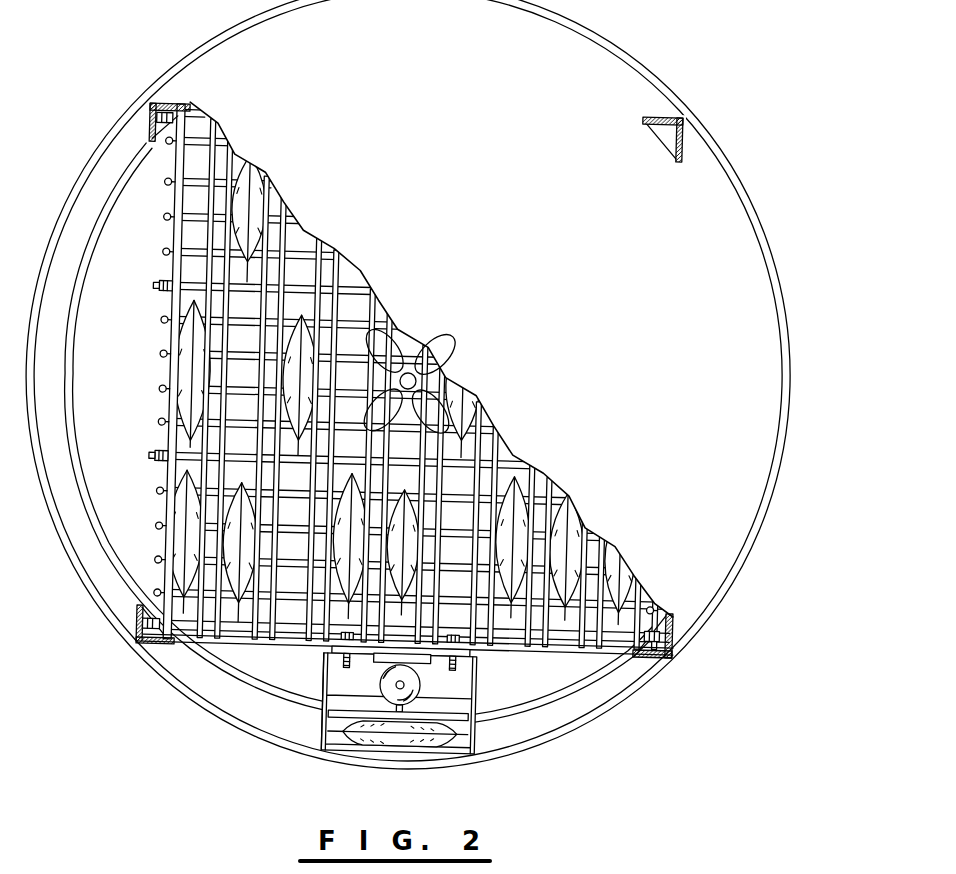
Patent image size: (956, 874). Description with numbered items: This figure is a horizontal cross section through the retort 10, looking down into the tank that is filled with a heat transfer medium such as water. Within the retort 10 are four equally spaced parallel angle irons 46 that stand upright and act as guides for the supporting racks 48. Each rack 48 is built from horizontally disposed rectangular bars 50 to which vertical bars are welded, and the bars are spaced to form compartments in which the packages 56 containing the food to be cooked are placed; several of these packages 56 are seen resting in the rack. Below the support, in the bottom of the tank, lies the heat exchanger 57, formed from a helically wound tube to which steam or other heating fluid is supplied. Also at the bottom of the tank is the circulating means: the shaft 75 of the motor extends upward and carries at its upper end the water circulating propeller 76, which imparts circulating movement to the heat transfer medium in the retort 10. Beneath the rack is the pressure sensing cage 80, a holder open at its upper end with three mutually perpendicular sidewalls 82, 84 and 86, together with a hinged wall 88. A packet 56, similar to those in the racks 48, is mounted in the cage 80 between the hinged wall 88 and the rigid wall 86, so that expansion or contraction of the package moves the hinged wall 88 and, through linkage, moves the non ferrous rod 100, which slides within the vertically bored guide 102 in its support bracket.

The retort 10 is at (596, 722).
The parallel angle irons 46 is at (166, 112).
The supporting rack 48 is at (170, 309).
The rectangular bars 50 is at (390, 456).
The packages 56 is at (245, 178).
The heat exchanger 57 is at (82, 265).
The shaft 75 is at (416, 372).
The water circulating propeller 76 is at (382, 330).
The cage 80 is at (484, 686).
The sidewall 82 is at (485, 734).
The sidewall 84 is at (331, 686).
The rigid wall 86 is at (413, 754).
The hinged wall 88 is at (385, 714).
The non ferrous rod 100 is at (413, 684).
The guide 102 is at (429, 691).